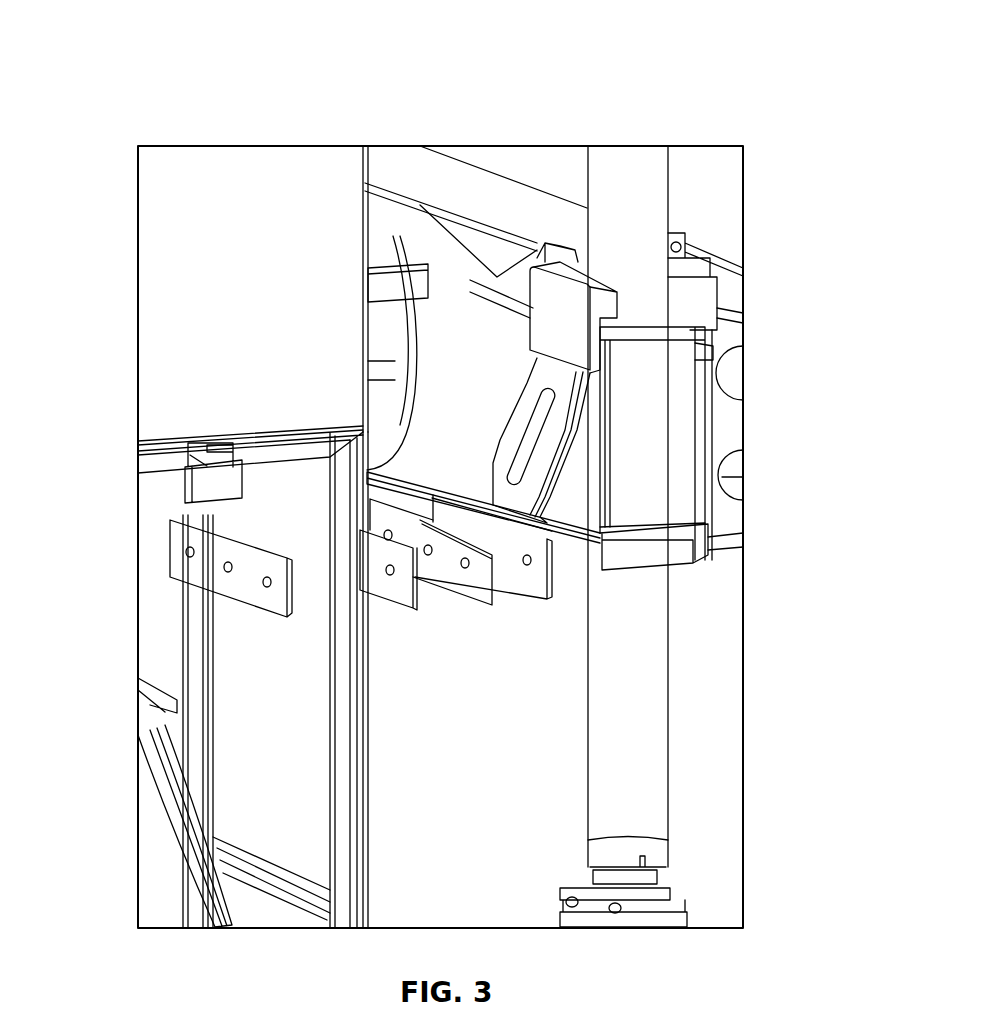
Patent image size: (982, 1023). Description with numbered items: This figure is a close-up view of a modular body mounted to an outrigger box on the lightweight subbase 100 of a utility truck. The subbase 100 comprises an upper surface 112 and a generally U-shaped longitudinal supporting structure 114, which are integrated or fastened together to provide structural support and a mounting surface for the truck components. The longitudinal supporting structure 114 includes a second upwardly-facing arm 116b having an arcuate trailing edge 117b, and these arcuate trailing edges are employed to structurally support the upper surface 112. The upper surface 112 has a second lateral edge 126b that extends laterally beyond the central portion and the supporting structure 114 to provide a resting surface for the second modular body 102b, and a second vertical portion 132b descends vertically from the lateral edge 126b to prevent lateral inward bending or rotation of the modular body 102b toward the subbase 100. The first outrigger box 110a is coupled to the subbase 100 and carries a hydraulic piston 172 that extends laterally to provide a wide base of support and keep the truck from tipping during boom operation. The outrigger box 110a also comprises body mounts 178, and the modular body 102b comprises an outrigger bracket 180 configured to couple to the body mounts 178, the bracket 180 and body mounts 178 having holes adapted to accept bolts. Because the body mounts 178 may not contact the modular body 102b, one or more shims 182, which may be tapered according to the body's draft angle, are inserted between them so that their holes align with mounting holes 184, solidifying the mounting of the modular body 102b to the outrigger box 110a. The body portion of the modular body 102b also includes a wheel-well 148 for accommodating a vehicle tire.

The lightweight subbase 100 is at (152, 86).
The second modular body 102b is at (160, 240).
The second upwardly-facing arm 116b is at (372, 346).
The arcuate trailing edge 117b is at (397, 405).
The upper surface 112 is at (376, 240).
The second lateral edge 126b is at (407, 287).
The second vertical portion 132b is at (470, 302).
The first outrigger box 110a is at (543, 250).
The longitudinal supporting structure 114 is at (403, 348).
The hydraulic piston 172 is at (627, 225).
The outrigger bracket 180 is at (197, 565).
The mounting holes 184 is at (265, 588).
The wheel-well 148 is at (187, 813).
The body mounts 178 is at (527, 582).
The shims 182 is at (393, 592).